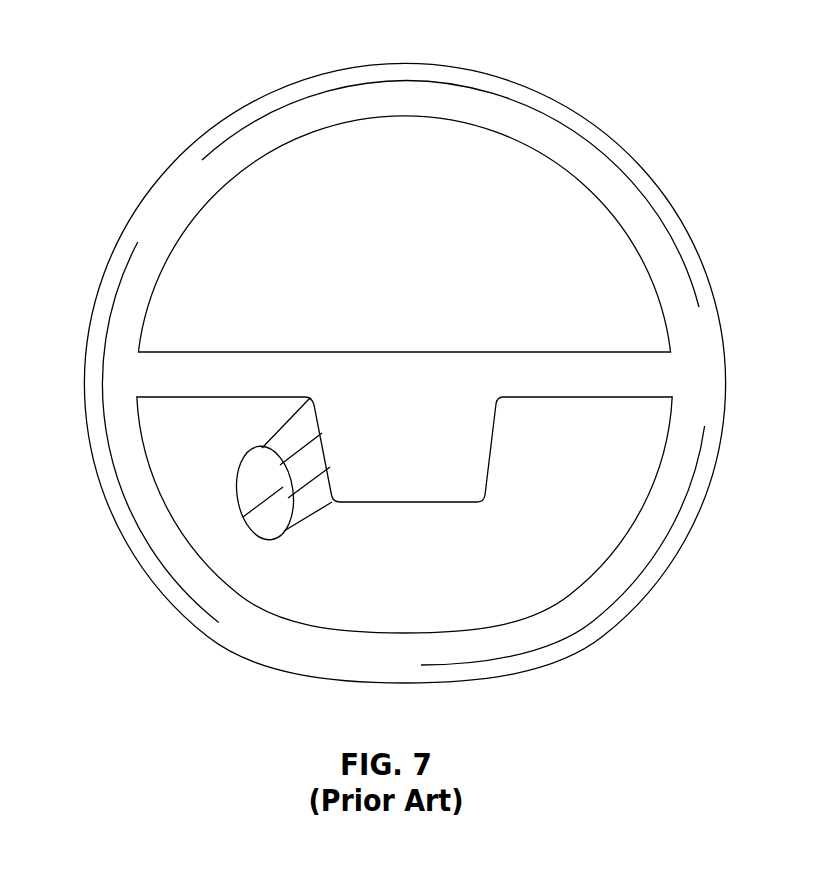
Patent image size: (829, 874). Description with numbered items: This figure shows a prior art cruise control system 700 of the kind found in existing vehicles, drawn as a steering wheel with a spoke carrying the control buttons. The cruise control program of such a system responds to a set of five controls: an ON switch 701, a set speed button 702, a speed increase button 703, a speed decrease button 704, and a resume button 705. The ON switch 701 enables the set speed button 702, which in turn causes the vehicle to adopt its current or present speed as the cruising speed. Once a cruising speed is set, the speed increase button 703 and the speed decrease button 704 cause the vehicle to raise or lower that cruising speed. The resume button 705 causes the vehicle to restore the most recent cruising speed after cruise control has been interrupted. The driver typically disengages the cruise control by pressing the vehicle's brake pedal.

The prior art steering wheel 700 is at (120, 28).
The ON switch 701 is at (297, 430).
The set speed button 702 is at (315, 460).
The speed increase button 703 is at (248, 478).
The speed decrease button 704 is at (278, 518).
The resume button 705 is at (304, 506).